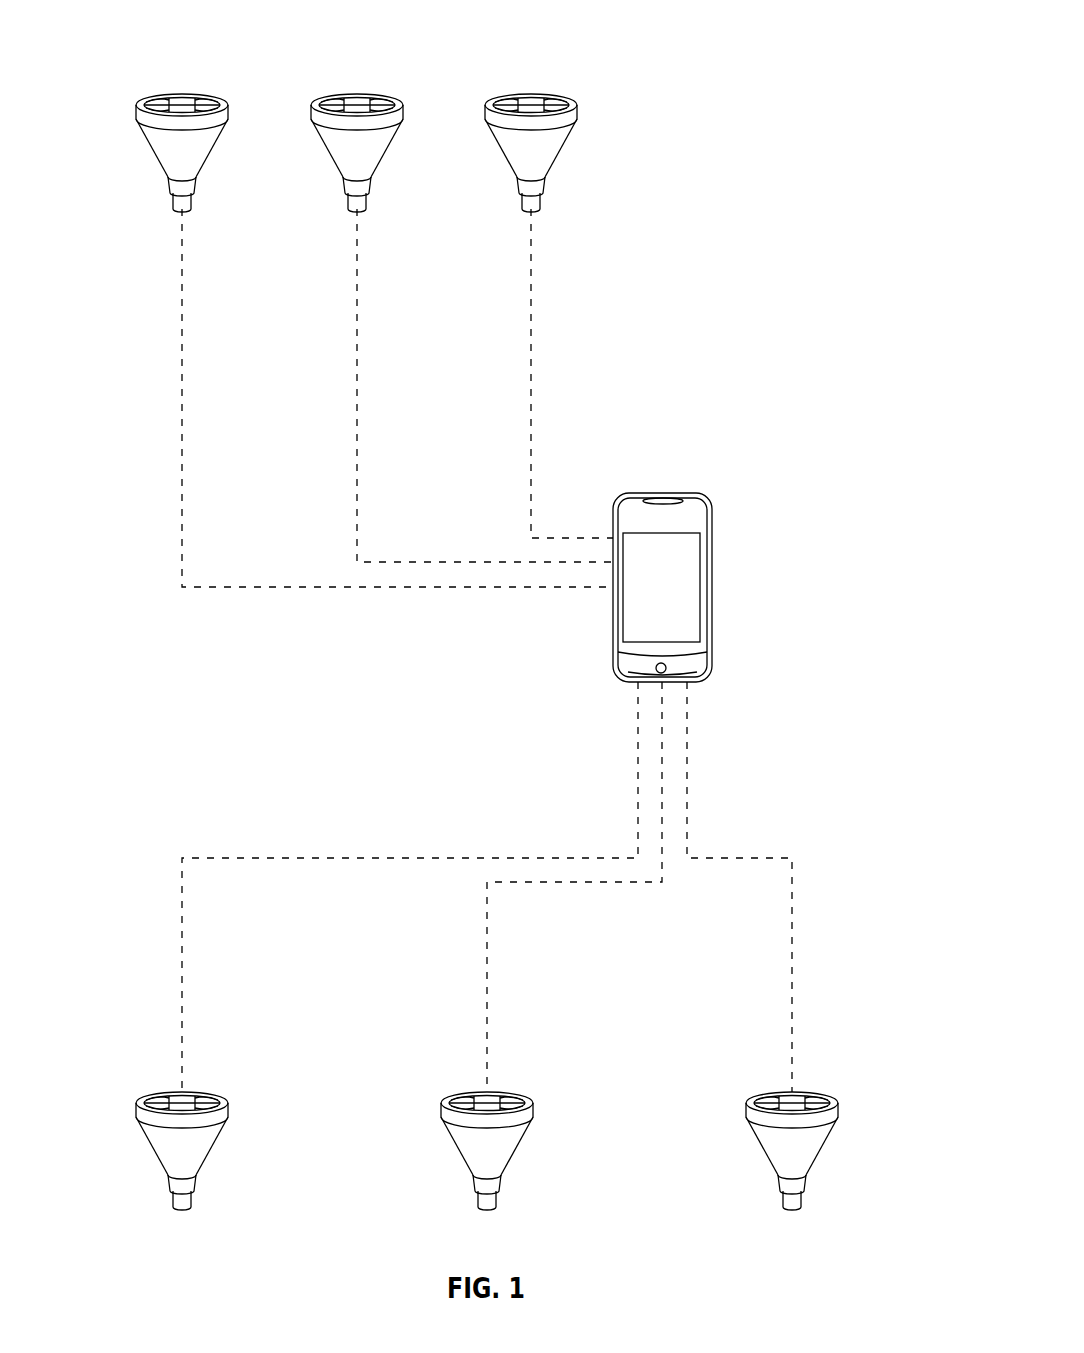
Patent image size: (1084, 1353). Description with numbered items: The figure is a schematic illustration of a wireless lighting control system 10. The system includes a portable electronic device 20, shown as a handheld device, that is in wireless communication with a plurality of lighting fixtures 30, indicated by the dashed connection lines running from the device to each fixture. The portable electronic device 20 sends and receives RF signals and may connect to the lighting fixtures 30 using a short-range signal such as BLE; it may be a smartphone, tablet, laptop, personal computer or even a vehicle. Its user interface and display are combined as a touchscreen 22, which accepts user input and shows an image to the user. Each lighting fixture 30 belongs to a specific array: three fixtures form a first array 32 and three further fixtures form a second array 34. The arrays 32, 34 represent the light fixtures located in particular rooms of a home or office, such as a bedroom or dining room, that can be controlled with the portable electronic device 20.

The wireless lighting control system 10 is at (807, 187).
The portable electronic device 20 is at (677, 493).
The touchscreen 22 is at (665, 602).
The lighting fixture 30 is at (163, 93).
The first array 32 is at (453, 32).
The second array 34 is at (565, 1238).